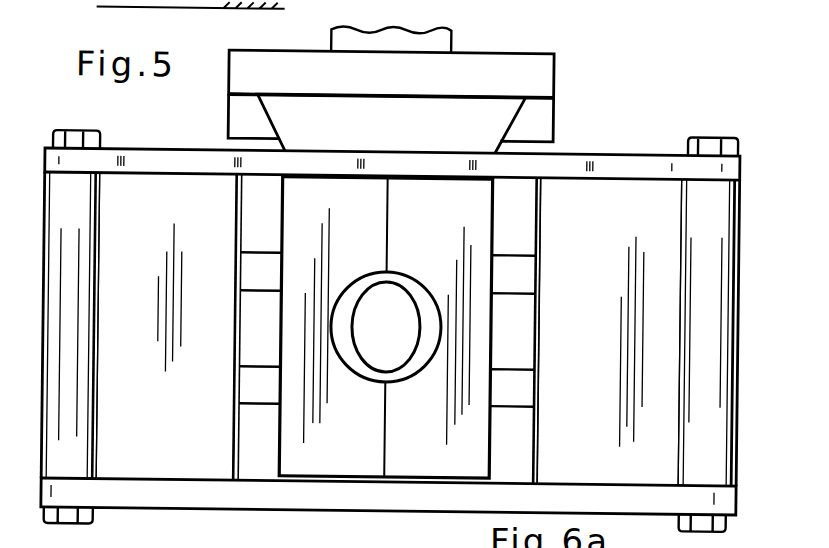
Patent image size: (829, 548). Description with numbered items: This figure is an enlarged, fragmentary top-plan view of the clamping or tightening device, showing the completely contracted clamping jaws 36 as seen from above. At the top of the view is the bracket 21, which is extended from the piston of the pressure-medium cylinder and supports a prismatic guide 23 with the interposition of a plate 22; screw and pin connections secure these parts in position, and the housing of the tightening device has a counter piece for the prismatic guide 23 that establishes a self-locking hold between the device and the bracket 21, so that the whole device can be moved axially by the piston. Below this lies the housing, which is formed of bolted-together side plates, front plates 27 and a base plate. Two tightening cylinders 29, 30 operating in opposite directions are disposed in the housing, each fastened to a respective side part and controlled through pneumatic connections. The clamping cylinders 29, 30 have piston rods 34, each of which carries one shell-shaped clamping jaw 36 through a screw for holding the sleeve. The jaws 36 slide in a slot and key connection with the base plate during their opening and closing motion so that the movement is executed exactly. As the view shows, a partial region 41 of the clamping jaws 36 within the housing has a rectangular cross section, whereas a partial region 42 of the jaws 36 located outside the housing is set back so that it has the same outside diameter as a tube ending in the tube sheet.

The bracket 21 is at (437, 30).
The plate 22 is at (540, 67).
The prismatic guide 23 is at (540, 118).
The front plate 27 is at (133, 157).
The tightening cylinder 29 is at (643, 181).
The tightening cylinder 30 is at (178, 213).
The piston rod 34 is at (535, 322).
The clamping jaw 36 is at (308, 459).
The partial region of the clamping jaws 41 is at (445, 188).
The partial region of the clamping jaws 42 is at (407, 369).